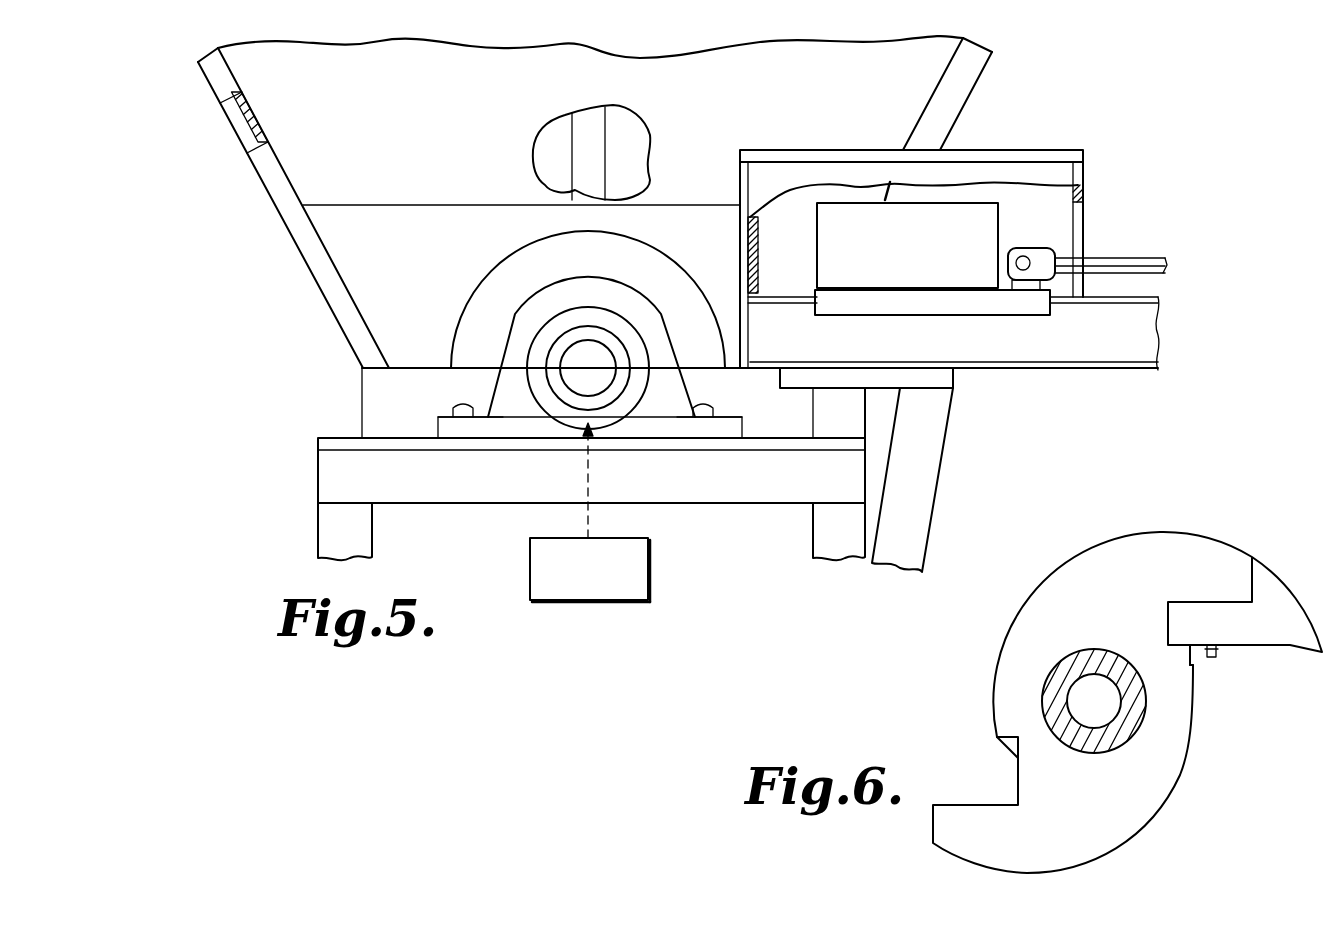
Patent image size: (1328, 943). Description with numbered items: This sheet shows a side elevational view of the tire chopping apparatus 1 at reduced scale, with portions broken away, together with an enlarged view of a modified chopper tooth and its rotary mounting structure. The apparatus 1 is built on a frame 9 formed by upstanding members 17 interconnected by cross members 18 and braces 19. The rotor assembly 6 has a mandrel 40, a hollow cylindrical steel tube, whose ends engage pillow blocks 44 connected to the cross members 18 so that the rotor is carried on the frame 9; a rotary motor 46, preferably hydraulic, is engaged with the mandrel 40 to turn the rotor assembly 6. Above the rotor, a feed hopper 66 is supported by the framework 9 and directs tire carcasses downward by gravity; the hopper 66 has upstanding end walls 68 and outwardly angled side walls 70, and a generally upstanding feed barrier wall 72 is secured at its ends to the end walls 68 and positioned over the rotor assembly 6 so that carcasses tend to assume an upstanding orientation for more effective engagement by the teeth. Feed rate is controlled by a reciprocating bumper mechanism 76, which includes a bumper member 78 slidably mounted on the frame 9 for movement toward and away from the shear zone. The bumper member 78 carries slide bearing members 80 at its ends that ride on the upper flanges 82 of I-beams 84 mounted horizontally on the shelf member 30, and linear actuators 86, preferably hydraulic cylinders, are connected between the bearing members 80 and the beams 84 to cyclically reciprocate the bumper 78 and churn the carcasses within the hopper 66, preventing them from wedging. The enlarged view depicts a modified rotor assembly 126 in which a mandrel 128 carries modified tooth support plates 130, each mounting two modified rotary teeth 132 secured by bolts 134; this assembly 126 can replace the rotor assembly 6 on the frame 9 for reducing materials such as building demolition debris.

In FIG. 5, the tire chopping apparatus 1 is at (1088, 100).
In FIG. 5, the rotor assembly 6 is at (565, 322).
In FIG. 5, the frame 9 is at (331, 430).
In FIG. 5, the upstanding members 17 is at (357, 538).
In FIG. 5, the cross members 18 is at (668, 492).
In FIG. 5, the braces 19 is at (933, 453).
In FIG. 5, the shelf member 30 is at (952, 380).
In FIG. 5, the mandrel 40 is at (553, 373).
In FIG. 5, the pillow blocks 44 is at (522, 317).
In FIG. 5, the rotary motor 46 is at (577, 600).
In FIG. 5, the feed hopper 66 is at (1000, 65).
In FIG. 5, the end walls 68 is at (293, 172).
In FIG. 5, the side walls 70 is at (236, 100).
In FIG. 5, the feed barrier wall 72 is at (575, 165).
In FIG. 5, the bumper mechanism 76 is at (855, 212).
In FIG. 5, the bumper member 78 is at (812, 216).
In FIG. 5, the slide bearing members 80 is at (870, 302).
In FIG. 5, the upper flanges 82 is at (1115, 303).
In FIG. 5, the I-beams 84 is at (1067, 347).
In FIG. 5, the linear actuators 86 is at (1125, 263).
In FIG. 6, the modified rotor assembly 126 is at (1099, 694).
In FIG. 6, the mandrel 128 is at (1057, 710).
In FIG. 6, the modified tooth support plates 130 is at (1157, 768).
In FIG. 6, the modified rotary teeth 132 is at (1268, 590).
In FIG. 6, the bolts 134 is at (1213, 653).